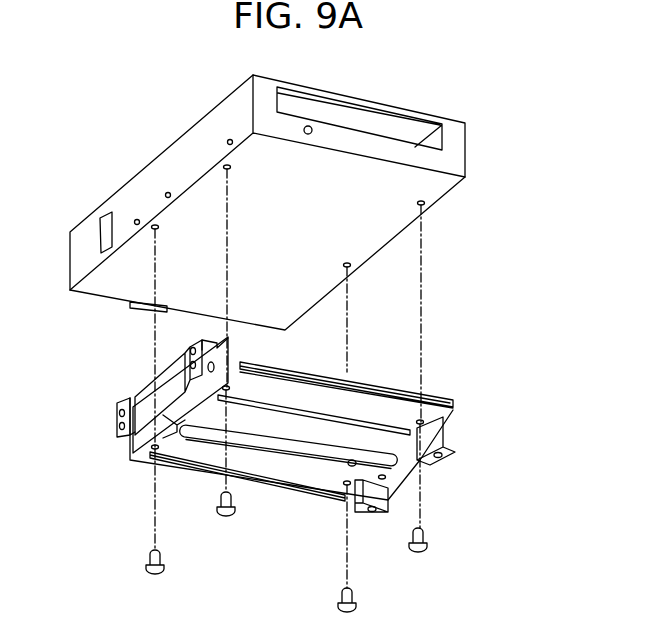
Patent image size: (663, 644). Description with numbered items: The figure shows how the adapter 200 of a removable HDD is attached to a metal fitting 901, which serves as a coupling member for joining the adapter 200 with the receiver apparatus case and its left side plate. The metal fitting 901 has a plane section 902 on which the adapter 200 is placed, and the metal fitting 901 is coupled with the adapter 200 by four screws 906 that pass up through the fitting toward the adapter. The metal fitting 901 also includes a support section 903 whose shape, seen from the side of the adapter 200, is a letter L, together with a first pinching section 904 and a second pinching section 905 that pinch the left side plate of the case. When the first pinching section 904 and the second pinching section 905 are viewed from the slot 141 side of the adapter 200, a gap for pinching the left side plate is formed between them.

The slot 141 is at (393, 123).
The adapter 200 is at (465, 142).
The metal fitting 901 is at (440, 400).
The plane section 902 is at (370, 382).
The support section 903 is at (440, 438).
The first pinching section 904 is at (118, 408).
The second pinching section 905 is at (125, 445).
The screws 906 is at (410, 550).